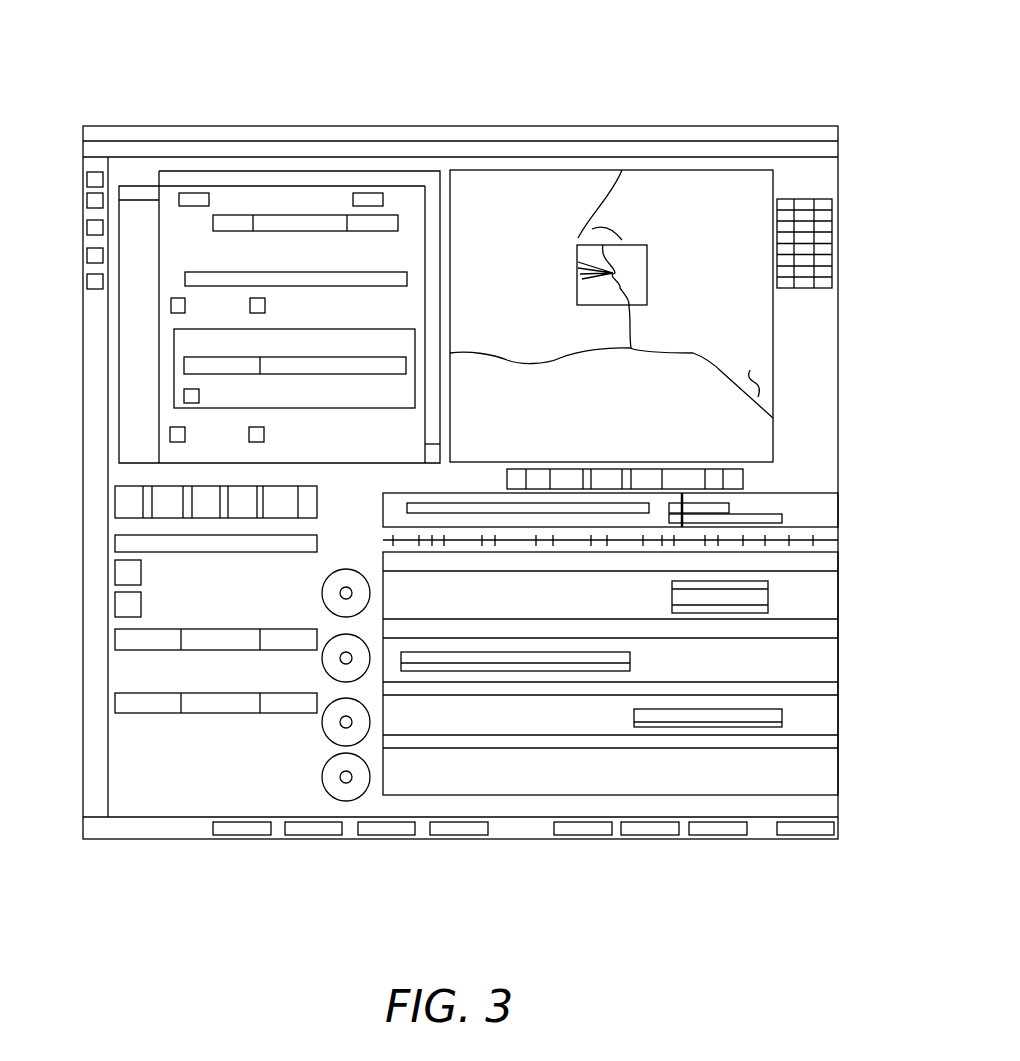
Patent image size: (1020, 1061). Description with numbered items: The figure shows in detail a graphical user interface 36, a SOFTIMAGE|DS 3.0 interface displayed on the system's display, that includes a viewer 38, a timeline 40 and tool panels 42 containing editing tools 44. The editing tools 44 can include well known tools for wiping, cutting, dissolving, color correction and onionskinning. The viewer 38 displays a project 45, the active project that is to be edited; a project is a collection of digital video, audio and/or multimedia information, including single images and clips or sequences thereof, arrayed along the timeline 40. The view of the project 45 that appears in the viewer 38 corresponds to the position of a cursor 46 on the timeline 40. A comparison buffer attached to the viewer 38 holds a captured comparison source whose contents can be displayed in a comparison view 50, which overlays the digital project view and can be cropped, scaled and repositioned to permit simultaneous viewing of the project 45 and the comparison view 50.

The graphical user interface 36 is at (358, 125).
The viewer 38 is at (568, 170).
The timeline 40 is at (757, 750).
The tool panels 42 is at (183, 723).
The editing tools 44 is at (235, 318).
The project 45 is at (758, 385).
The cursor 46 is at (684, 504).
The comparison view 50 is at (628, 243).